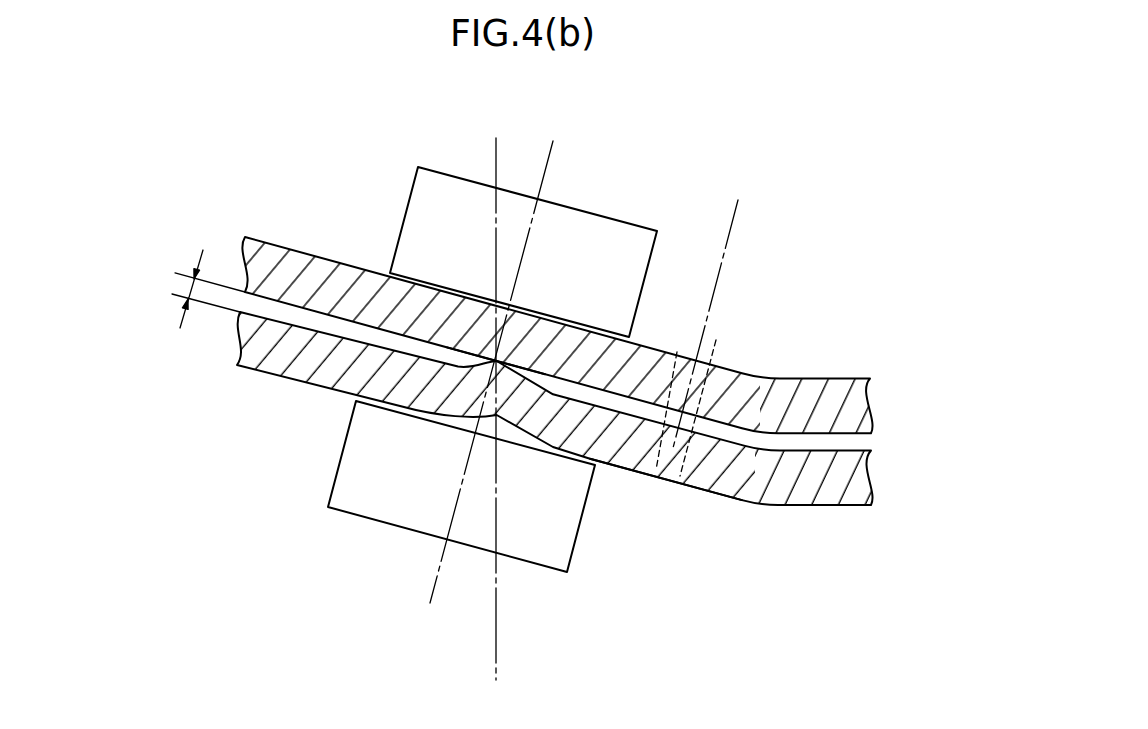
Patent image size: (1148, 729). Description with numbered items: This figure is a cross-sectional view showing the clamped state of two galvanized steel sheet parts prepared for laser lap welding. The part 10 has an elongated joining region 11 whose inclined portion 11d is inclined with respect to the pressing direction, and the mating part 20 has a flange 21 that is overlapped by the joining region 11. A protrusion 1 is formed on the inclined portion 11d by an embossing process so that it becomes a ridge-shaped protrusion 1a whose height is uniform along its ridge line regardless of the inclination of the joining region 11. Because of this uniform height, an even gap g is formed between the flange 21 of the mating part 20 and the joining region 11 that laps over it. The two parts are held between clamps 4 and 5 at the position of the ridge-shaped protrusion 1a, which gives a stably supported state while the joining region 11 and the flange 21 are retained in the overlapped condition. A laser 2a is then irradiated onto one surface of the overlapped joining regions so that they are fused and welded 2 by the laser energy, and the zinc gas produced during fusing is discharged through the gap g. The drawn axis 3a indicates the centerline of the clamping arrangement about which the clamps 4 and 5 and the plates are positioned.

The protrusion 1 is at (583, 241).
The ridge-shaped protrusion 1a is at (498, 360).
The weld 2 is at (716, 340).
The laser 2a is at (717, 304).
The pressing axis 3a is at (491, 391).
The clamp 4 is at (407, 203).
The clamp 5 is at (341, 452).
The part 10 is at (555, 461).
The joining region 11 is at (795, 506).
The inclined portion of the joining region 11d is at (690, 488).
The mating part 20 is at (578, 335).
The flange 21 is at (817, 378).
The gap g is at (198, 289).